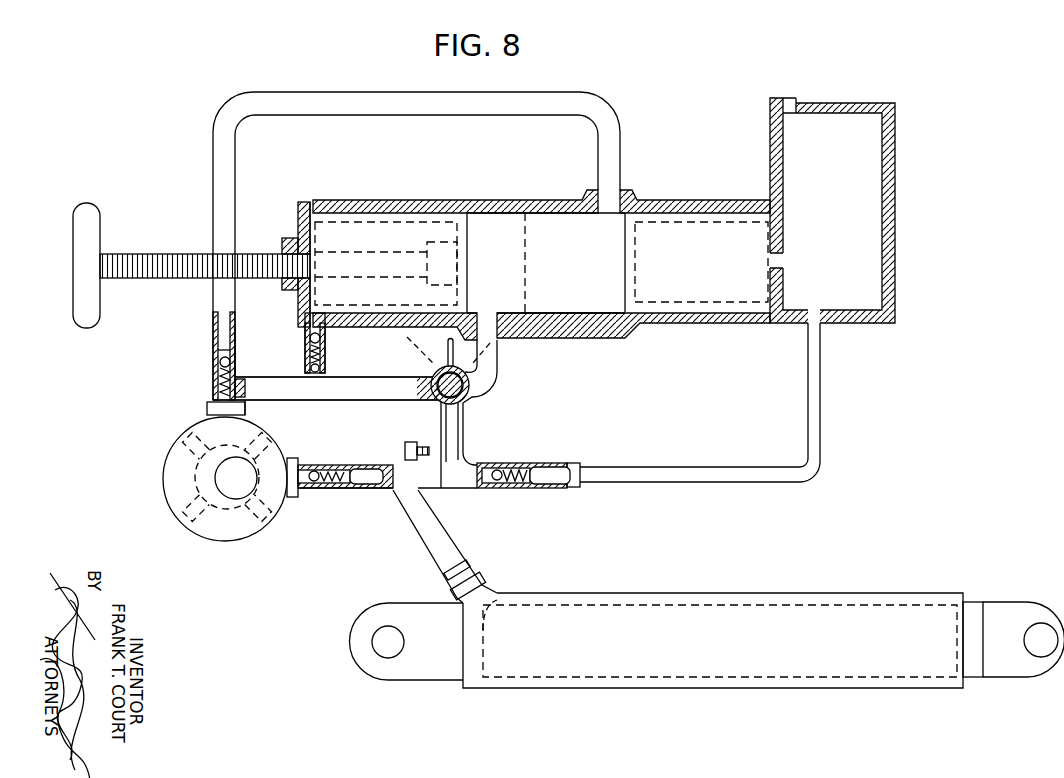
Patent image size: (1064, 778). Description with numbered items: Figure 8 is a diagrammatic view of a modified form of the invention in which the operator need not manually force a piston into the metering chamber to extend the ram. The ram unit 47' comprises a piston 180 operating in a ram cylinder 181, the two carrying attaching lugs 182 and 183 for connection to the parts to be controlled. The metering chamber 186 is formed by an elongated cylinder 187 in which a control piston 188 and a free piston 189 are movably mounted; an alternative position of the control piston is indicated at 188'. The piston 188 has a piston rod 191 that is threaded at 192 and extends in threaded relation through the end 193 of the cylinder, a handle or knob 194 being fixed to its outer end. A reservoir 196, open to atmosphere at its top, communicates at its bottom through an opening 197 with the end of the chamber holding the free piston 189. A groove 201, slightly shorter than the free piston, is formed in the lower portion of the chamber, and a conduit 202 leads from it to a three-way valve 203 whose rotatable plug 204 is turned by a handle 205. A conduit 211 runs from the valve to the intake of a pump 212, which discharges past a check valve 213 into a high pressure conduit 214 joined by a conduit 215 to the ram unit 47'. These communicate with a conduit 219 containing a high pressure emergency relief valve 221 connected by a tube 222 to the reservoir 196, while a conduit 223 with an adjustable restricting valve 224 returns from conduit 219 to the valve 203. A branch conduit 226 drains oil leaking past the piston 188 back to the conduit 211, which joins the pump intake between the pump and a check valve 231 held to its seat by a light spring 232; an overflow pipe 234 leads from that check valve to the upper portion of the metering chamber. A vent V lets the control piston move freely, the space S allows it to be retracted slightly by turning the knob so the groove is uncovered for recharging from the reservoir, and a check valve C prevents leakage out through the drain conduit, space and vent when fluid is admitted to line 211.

The overflow pipe 234 is at (225, 122).
The handle or knob 194 is at (97, 222).
The threaded portion 192 is at (147, 258).
The cylinder end 193 is at (296, 238).
The vent V is at (298, 228).
The space S is at (306, 204).
The elongated cylinder 187 is at (428, 200).
The piston rod 191 is at (362, 250).
The control piston 188 is at (490, 263).
The piston face alternate position 188' is at (558, 263).
The metering chamber 186 is at (498, 222).
The free piston 189 is at (627, 262).
The groove 201 is at (560, 313).
The reservoir 196 is at (889, 158).
The opening 197 is at (779, 261).
The tube 222 is at (815, 411).
The check valve 231 is at (221, 361).
The spring 232 is at (224, 383).
The branch conduit 226 is at (304, 354).
The check valve C is at (320, 339).
The conduit 211 is at (330, 388).
The rotatable plug 204 is at (430, 407).
The three-way valve 203 is at (424, 406).
The valve handle 205 is at (446, 352).
The conduit 202 is at (486, 364).
The conduit 223 is at (456, 436).
The adjustable restricting valve 224 is at (406, 452).
The check valve 213 is at (318, 473).
The high pressure conduit 214 is at (364, 491).
The conduit 219 is at (472, 467).
The high pressure emergency relief valve 221 is at (501, 468).
The pump 212 is at (166, 482).
The conduit 215 is at (436, 537).
The piston 180 is at (492, 598).
The ram unit 47' is at (710, 608).
The ram cylinder 181 is at (530, 690).
The attaching lug 183 is at (393, 612).
The attaching lug 182 is at (1014, 615).